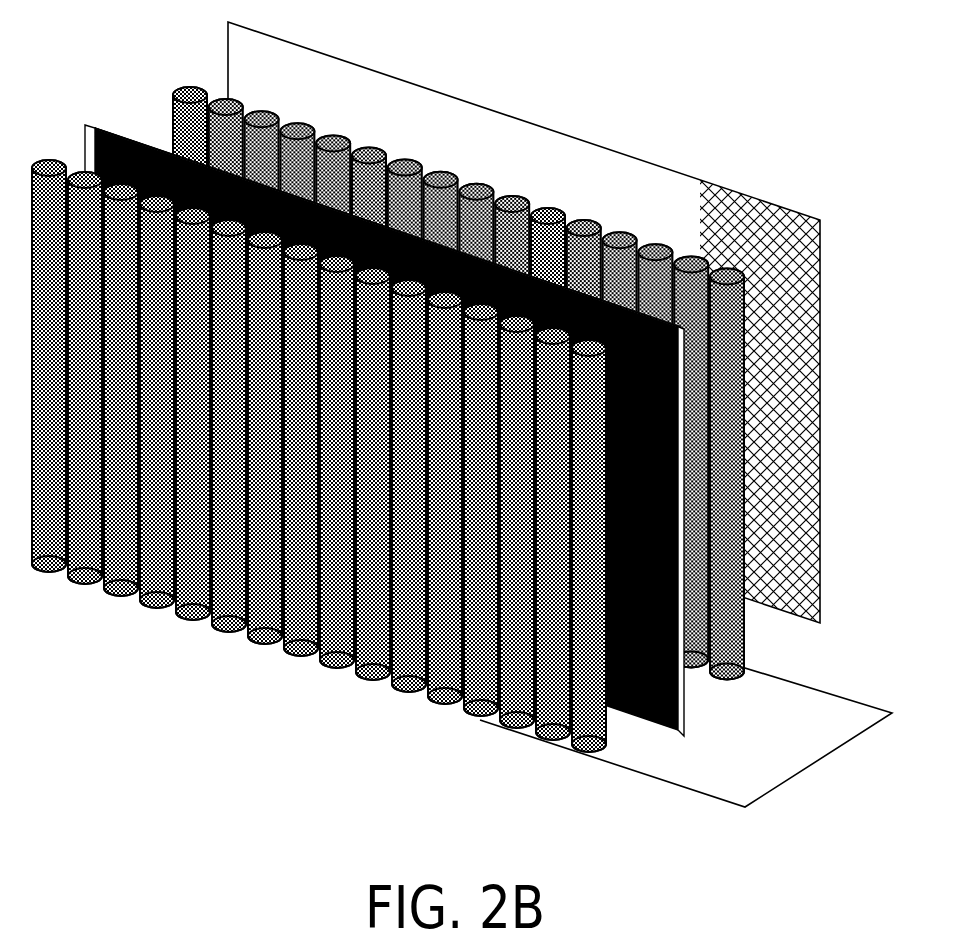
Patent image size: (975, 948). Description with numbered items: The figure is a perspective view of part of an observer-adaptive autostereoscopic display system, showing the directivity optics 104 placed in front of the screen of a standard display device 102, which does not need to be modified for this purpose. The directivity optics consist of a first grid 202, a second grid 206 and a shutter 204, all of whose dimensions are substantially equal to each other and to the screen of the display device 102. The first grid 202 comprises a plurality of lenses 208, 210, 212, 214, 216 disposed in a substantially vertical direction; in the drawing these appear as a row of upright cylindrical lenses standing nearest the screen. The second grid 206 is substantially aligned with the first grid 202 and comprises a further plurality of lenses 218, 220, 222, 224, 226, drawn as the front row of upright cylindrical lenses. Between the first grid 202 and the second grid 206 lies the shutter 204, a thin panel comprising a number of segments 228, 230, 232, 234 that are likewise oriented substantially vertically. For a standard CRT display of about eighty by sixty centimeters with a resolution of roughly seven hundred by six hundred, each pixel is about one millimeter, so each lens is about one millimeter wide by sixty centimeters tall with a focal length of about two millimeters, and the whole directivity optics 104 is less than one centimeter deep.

The display device 102 is at (820, 608).
The directivity optics 104 is at (820, 760).
The first grid 202 is at (722, 680).
The shutter 204 is at (684, 703).
The second grid 206 is at (605, 735).
The lens 208 is at (744, 278).
The lens 210 is at (710, 262).
The lens 212 is at (686, 255).
The lens 214 is at (658, 243).
The lens 216 is at (630, 233).
The lens 218 is at (587, 715).
The lens 220 is at (553, 707).
The lens 222 is at (510, 705).
The lens 224 is at (473, 700).
The lens 226 is at (430, 677).
The segment 228 is at (160, 150).
The segment 230 is at (157, 148).
The segment 232 is at (113, 134).
The segment 234 is at (97, 137).